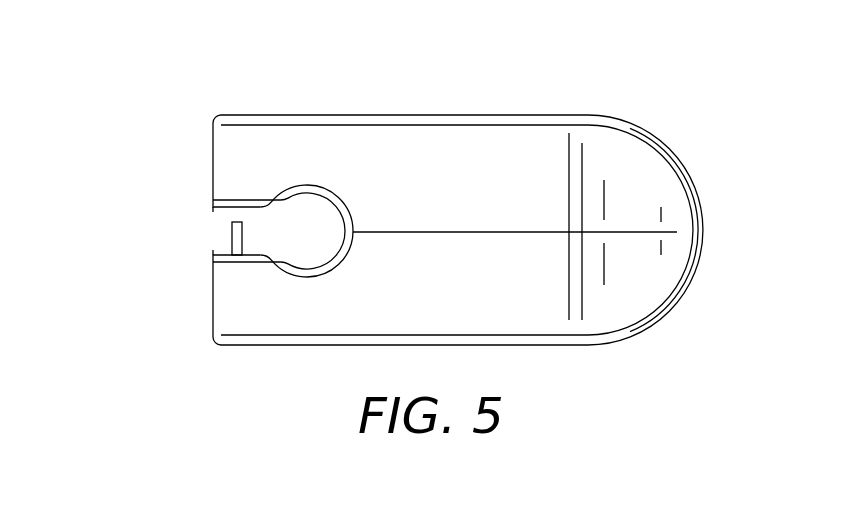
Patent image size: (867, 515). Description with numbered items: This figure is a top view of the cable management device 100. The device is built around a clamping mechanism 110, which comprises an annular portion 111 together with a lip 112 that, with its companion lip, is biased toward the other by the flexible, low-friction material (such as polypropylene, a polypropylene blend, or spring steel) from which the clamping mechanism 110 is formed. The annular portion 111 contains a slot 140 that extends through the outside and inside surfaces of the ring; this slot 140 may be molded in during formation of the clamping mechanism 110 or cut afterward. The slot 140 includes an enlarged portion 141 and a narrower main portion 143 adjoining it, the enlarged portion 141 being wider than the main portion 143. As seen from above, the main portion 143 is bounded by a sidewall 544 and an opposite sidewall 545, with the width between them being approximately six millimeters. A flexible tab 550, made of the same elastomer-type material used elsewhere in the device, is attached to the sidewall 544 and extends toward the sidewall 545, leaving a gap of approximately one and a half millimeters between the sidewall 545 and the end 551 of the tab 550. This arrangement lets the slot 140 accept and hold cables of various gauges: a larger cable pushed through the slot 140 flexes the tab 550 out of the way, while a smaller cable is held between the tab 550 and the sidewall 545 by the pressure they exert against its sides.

The cable management device 100 is at (210, 78).
The clamping mechanism 110 is at (242, 370).
The annular portion 111 is at (550, 315).
The lip 112 is at (655, 182).
The slot 140 is at (140, 233).
The enlarged portion 141 is at (337, 198).
The main portion 143 is at (205, 238).
The sidewall 544 is at (257, 258).
The sidewall 545 is at (250, 200).
The tab 550 is at (248, 232).
The end 551 is at (237, 222).